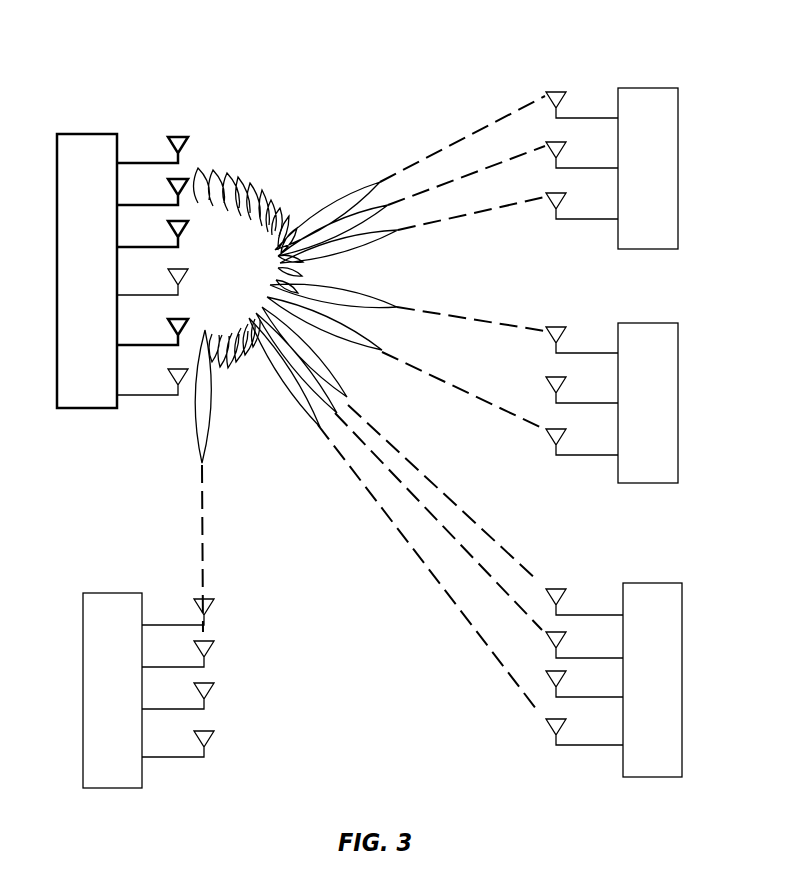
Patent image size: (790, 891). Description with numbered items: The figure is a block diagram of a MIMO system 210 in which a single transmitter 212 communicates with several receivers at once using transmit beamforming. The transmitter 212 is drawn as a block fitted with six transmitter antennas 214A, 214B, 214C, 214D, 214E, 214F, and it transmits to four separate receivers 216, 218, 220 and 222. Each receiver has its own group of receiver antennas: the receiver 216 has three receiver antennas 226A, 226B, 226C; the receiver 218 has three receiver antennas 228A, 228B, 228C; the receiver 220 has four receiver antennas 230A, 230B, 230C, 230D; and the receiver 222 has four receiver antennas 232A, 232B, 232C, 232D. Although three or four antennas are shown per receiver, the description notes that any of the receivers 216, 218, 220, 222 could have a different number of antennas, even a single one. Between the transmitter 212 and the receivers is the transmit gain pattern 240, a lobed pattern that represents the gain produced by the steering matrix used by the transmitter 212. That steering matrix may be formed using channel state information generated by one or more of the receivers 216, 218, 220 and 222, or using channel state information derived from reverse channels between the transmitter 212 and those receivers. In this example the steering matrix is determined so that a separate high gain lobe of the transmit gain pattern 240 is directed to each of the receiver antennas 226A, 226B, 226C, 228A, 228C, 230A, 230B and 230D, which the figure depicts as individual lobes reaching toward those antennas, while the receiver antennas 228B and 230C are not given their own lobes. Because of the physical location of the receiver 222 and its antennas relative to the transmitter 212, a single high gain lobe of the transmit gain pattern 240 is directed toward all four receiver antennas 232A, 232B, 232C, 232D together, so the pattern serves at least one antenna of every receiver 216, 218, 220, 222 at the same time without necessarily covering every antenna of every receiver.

The MIMO system 210 is at (206, 42).
The transmitter 212 is at (101, 133).
The transmitter antenna 214A is at (167, 141).
The transmitter antenna 214B is at (167, 183).
The transmitter antenna 214C is at (167, 225).
The transmitter antenna 214D is at (167, 273).
The transmitter antenna 214E is at (167, 323).
The transmitter antenna 214F is at (167, 373).
The receiver 216 is at (638, 87).
The receiver 218 is at (638, 322).
The receiver 220 is at (641, 582).
The receiver 222 is at (128, 592).
The receiver antenna 226A is at (566, 97).
The receiver antenna 226B is at (566, 147).
The receiver antenna 226C is at (566, 198).
The receiver antenna 228A is at (566, 332).
The receiver antenna 228B is at (566, 382).
The receiver antenna 228C is at (566, 434).
The receiver antenna 230A is at (566, 594).
The receiver antenna 230B is at (566, 637).
The receiver antenna 230C is at (566, 676).
The receiver antenna 230D is at (566, 724).
The receiver antenna 232A is at (194, 603).
The receiver antenna 232B is at (194, 645).
The receiver antenna 232C is at (194, 687).
The receiver antenna 232D is at (194, 735).
The transmit gain pattern 240 is at (248, 174).